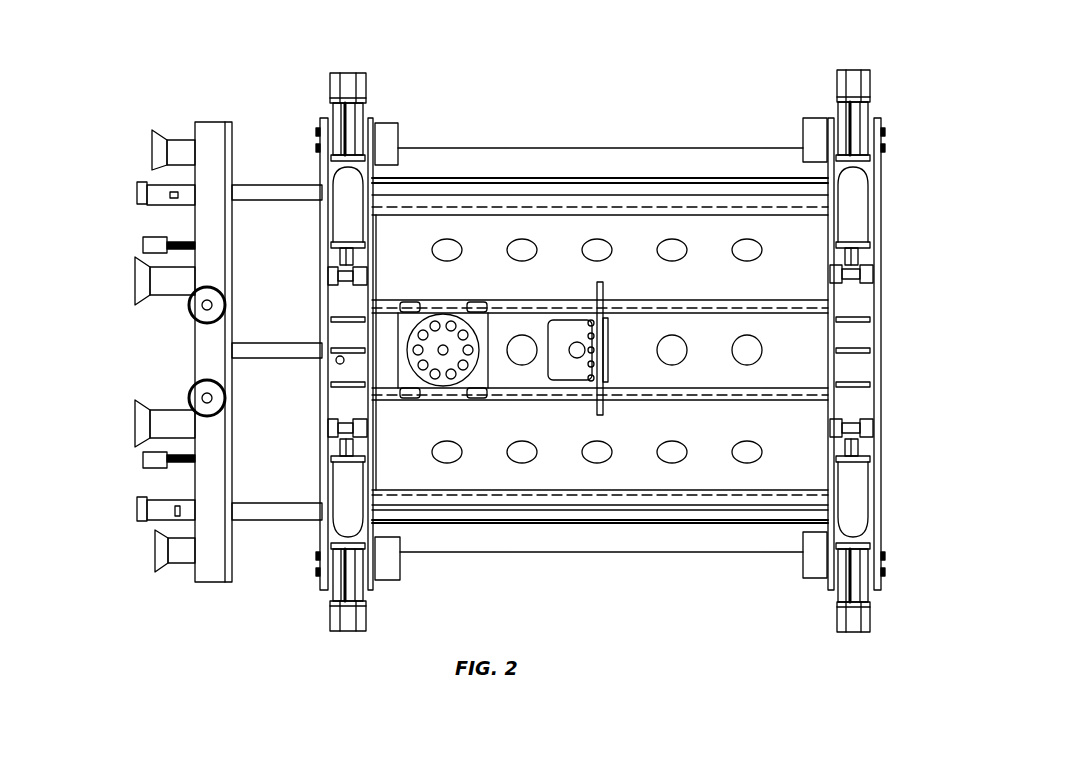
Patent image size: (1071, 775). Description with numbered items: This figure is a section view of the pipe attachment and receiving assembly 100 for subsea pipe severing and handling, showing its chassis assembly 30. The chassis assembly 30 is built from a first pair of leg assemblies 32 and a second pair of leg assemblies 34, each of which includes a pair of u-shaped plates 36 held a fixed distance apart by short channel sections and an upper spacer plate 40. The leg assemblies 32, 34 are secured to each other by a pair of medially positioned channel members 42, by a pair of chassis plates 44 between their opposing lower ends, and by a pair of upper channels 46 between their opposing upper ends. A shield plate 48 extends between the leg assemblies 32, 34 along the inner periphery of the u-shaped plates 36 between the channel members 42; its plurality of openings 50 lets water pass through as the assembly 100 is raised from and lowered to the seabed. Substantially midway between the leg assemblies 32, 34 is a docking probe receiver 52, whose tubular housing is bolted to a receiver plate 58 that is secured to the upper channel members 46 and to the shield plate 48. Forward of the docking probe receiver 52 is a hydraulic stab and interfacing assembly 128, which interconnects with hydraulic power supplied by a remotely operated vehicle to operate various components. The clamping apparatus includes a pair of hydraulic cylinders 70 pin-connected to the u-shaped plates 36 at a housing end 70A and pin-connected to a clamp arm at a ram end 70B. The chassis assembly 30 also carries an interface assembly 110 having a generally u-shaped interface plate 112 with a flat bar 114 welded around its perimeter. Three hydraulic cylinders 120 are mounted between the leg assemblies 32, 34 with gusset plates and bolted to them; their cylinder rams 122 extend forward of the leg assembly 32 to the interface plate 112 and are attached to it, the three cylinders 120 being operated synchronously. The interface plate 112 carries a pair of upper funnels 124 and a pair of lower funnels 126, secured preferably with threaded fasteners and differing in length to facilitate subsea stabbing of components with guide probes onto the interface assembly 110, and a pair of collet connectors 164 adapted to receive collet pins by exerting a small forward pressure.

The pipe attachment and receiving (PAR) assembly 100 is at (622, 62).
The chassis assembly 30 is at (480, 94).
The first pair of leg assemblies 32 is at (318, 552).
The second pair of leg assemblies 34 is at (882, 498).
The u-shaped plates 36 is at (376, 215).
The upper spacer plate 40 is at (340, 356).
The channel members 42 is at (685, 492).
The chassis plates 44 is at (573, 552).
The upper channels 46 is at (700, 300).
The shield plate 48 is at (482, 488).
The openings 50 is at (762, 338).
The docking probe receiver 52 is at (553, 384).
The receiver plate 58 is at (598, 287).
The hydraulic cylinders 70 is at (338, 217).
The housing end 70A is at (330, 283).
The ram end 70B is at (366, 92).
The interface assembly 110 is at (211, 110).
The interface plate 112 is at (195, 128).
The flat bar 114 is at (230, 122).
The hydraulic cylinders 120 is at (752, 512).
The cylinder rams 122 is at (262, 186).
The upper funnels 124 is at (135, 268).
The lower funnels 126 is at (152, 140).
The hydraulic stab and interfacing assembly 128 is at (446, 386).
The collet connectors 164 is at (137, 188).